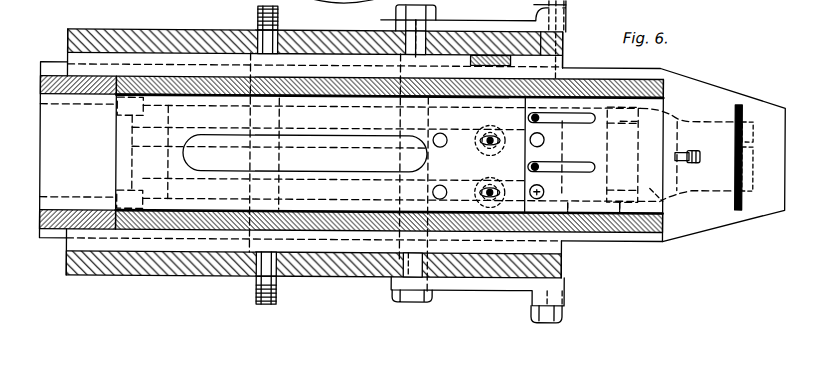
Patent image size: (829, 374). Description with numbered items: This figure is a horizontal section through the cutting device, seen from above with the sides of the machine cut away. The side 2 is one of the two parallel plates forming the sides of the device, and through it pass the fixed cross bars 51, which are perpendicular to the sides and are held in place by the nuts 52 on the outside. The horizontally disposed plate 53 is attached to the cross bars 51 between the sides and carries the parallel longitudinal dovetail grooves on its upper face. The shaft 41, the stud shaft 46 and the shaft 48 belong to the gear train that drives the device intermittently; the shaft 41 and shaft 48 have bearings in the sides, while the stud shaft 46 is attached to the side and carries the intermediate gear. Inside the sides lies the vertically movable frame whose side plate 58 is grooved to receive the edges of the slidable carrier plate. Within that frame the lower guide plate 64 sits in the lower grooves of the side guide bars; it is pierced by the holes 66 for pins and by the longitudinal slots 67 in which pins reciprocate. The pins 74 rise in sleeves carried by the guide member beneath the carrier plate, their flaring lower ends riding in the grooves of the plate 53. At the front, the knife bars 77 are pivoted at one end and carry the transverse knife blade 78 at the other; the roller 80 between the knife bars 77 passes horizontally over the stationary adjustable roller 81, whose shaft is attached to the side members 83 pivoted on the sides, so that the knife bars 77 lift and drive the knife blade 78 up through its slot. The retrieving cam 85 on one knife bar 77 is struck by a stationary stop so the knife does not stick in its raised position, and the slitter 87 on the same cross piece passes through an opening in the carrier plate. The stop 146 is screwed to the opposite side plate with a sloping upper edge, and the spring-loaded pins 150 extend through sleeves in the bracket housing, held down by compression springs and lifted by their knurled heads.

The side 2 is at (306, 33).
The shaft 41 is at (473, 16).
The stud shaft 46 is at (314, 139).
The shaft 48 is at (199, 2).
The cross bars 51 is at (257, 18).
The nuts 52 is at (416, 298).
The plate 53 is at (223, 160).
The side plate 58 is at (135, 227).
The guide plate 64 is at (650, 187).
The holes 66 is at (496, 175).
The longitudinal slots 67 is at (578, 166).
The pins 74 is at (480, 133).
The knife bars 77 is at (692, 113).
The knife blade 78 is at (742, 160).
The roller 80 is at (619, 236).
The stationary adjustable roller 81 is at (568, 236).
The side members 83 is at (566, 11).
The retrieving cam 85 is at (458, 231).
The slitter 87 is at (692, 160).
The stop 146 is at (560, 62).
The pins 150 is at (548, 123).